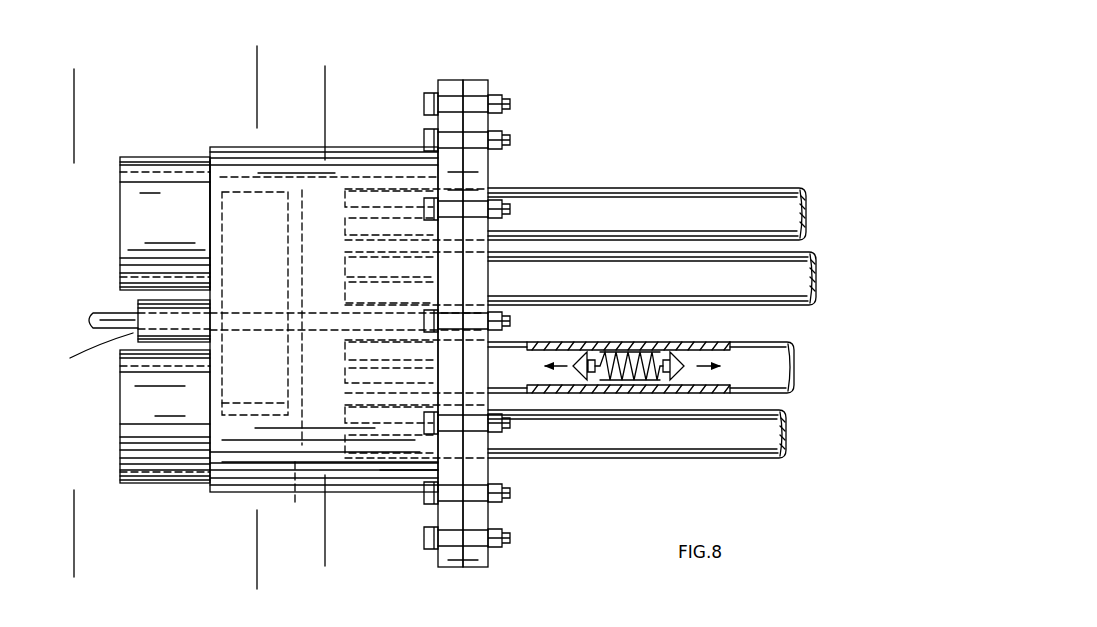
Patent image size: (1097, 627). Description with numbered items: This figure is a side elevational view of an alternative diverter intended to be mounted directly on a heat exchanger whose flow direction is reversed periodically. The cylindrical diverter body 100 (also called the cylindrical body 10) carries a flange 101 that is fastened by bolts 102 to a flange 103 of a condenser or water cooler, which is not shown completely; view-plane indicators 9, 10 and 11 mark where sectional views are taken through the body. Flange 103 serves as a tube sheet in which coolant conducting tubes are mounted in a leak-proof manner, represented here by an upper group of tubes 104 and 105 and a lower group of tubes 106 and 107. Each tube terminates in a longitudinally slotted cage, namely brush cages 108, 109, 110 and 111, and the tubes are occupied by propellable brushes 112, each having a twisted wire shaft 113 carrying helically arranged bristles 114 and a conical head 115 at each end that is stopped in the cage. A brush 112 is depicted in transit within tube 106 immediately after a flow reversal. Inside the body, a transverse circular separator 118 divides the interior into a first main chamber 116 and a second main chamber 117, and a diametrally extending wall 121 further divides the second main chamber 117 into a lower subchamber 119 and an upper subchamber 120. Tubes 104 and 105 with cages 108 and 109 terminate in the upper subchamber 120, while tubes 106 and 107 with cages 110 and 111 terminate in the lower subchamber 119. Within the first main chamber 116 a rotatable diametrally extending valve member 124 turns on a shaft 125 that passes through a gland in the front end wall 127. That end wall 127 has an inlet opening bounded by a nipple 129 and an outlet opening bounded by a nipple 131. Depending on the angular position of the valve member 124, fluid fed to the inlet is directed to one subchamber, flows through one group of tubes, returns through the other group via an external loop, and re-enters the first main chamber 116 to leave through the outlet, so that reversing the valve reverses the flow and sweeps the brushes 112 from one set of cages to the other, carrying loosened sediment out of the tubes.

The section line 9- 9 is at (112, 69).
The cylindrical body 10 is at (292, 46).
The section line 11- 11 is at (356, 66).
The cylindrical diverter body 100 is at (355, 146).
The flange 101 is at (445, 80).
The bolts 102 is at (515, 104).
The flange 103 is at (478, 80).
The upper tube 104 is at (807, 213).
The upper tube 105 is at (818, 285).
The lower tube 106 is at (795, 372).
The lower tube 107 is at (788, 438).
The brush cage 108 is at (345, 208).
The brush cage 109 is at (345, 274).
The brush cage 110 is at (345, 394).
The brush cage 111 is at (345, 424).
The propellable brush 112 is at (630, 341).
The twisted wire shaft 113 is at (646, 393).
The bristles 114 is at (645, 352).
The conical head 115 is at (582, 343).
The first main chamber 116 is at (258, 457).
The second main chamber 117 is at (398, 465).
The transverse circular separator 118 is at (293, 501).
The lower subchamber 119 is at (345, 358).
The upper subchamber 120 is at (345, 232).
The diametral wall 121 is at (300, 305).
The valve member 124 is at (263, 198).
The shaft 125 is at (100, 314).
The front end wall 127 is at (210, 212).
The nipple 129 is at (120, 230).
The nipple 131 is at (120, 446).